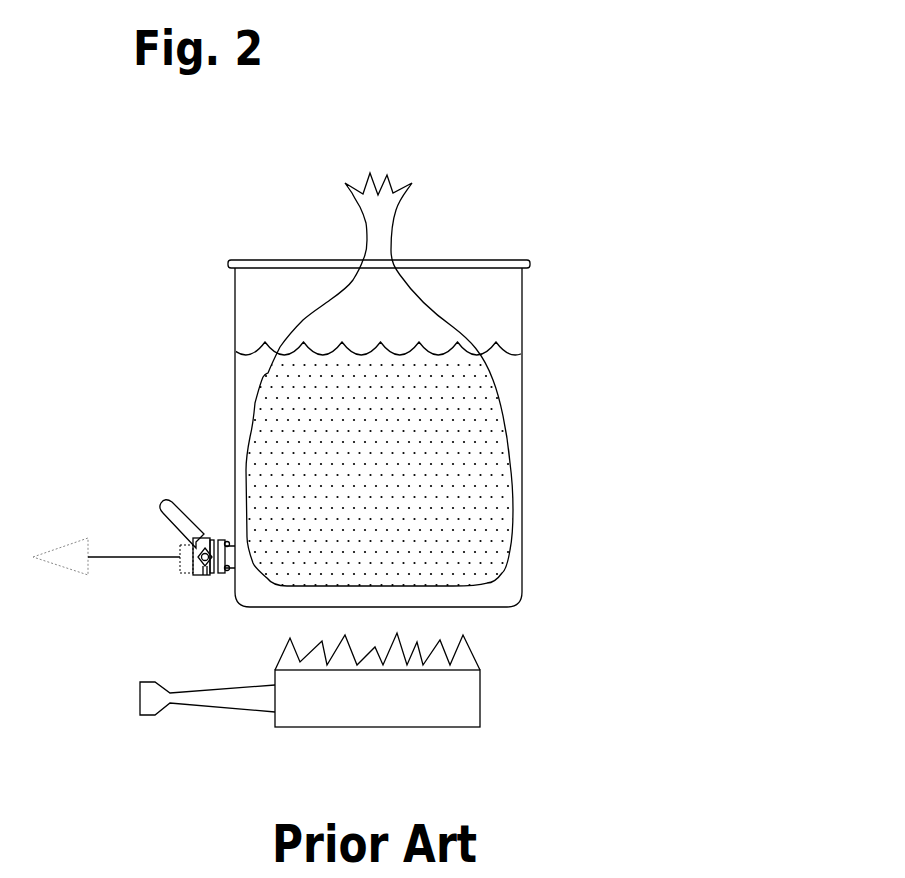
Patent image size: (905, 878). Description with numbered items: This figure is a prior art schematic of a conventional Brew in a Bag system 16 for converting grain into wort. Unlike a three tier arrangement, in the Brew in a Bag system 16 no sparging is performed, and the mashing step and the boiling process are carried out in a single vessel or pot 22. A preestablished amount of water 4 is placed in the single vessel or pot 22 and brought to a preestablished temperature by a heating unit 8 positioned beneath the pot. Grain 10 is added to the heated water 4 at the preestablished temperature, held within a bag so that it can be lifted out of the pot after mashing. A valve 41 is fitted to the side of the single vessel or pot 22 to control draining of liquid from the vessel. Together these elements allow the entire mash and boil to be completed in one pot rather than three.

The Brew in a Bag system 16 is at (597, 245).
The single vessel or pot 22 is at (523, 452).
The water 4 is at (510, 420).
The grain 10 is at (449, 387).
The valve 41 is at (183, 568).
The heating unit 8 is at (448, 695).